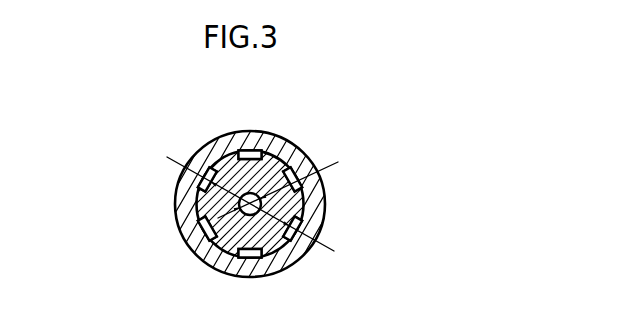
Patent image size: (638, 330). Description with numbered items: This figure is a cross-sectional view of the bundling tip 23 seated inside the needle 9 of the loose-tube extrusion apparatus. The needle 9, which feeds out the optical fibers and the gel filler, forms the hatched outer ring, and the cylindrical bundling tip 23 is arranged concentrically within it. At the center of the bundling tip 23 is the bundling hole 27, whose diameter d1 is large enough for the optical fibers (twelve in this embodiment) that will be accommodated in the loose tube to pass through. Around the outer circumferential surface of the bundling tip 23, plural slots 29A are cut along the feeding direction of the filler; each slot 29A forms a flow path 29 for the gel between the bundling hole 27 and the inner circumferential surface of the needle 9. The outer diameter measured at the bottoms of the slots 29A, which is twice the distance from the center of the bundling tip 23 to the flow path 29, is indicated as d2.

The needle 9 is at (316, 209).
The bundling tip 23 is at (222, 243).
The bundling hole 27 is at (293, 250).
The slots 29A is at (291, 165).
The flow path 29 is at (250, 204).
The diameter of the bundling hole d1 is at (290, 184).
The outer diameter at the bottoms of the slots d2 is at (264, 210).